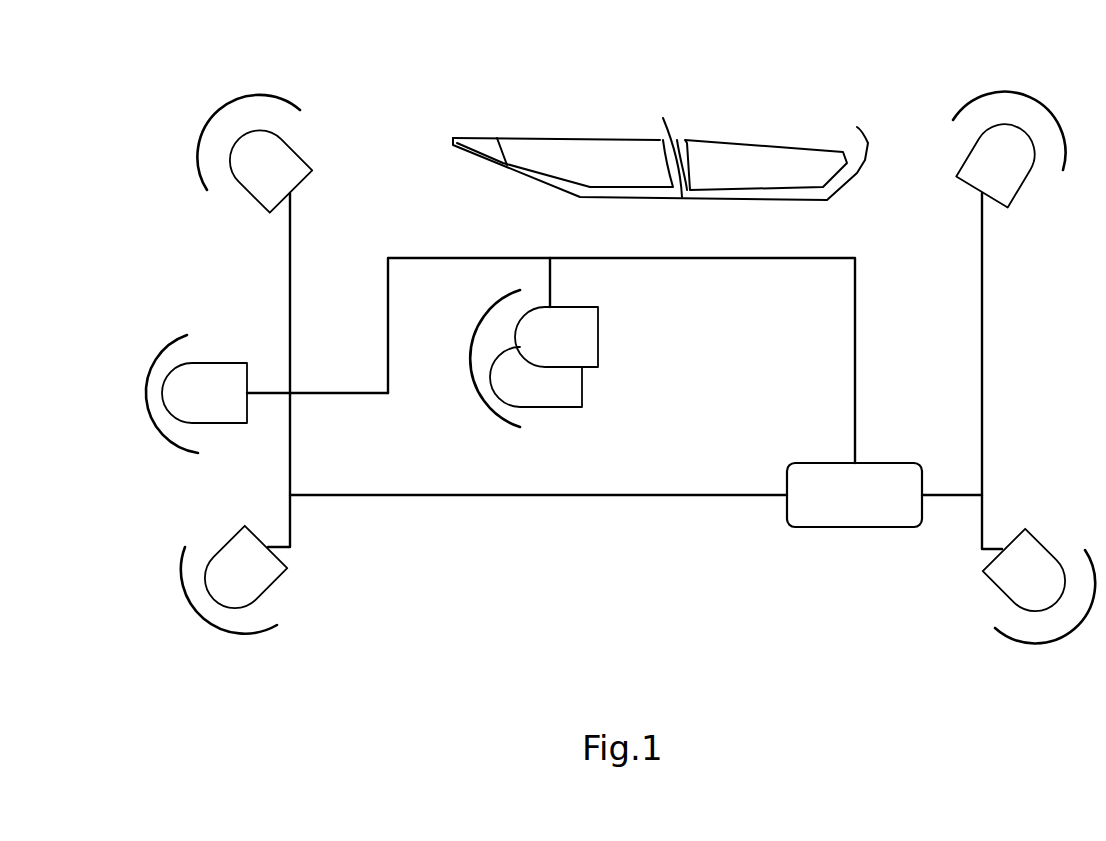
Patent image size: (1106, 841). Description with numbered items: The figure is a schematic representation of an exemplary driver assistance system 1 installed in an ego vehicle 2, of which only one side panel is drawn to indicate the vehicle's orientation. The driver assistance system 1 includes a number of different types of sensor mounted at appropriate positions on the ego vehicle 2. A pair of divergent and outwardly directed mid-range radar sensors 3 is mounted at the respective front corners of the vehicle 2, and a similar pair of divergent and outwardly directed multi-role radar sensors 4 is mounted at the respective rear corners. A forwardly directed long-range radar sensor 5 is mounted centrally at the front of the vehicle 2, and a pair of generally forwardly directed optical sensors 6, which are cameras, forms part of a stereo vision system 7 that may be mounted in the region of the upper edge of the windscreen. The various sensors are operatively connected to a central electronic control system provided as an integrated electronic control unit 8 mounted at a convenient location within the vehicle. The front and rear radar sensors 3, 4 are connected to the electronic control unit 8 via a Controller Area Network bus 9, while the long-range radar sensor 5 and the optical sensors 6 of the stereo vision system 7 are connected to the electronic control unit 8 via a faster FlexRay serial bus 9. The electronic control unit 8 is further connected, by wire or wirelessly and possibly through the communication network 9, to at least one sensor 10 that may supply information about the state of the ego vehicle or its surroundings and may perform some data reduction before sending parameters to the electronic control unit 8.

The driver assistance system 1 is at (378, 174).
The ego vehicle 2 is at (707, 140).
The mid-range radar sensors 3 is at (242, 137).
The multi-role radar sensors 4 is at (1003, 133).
The long-range radar sensor 5 is at (208, 365).
The optical sensors 6 is at (598, 340).
The stereo vision system 7 is at (462, 373).
The electronic control unit 8 is at (823, 527).
The bus 9 is at (985, 370).
The sensor 10 is at (440, 257).